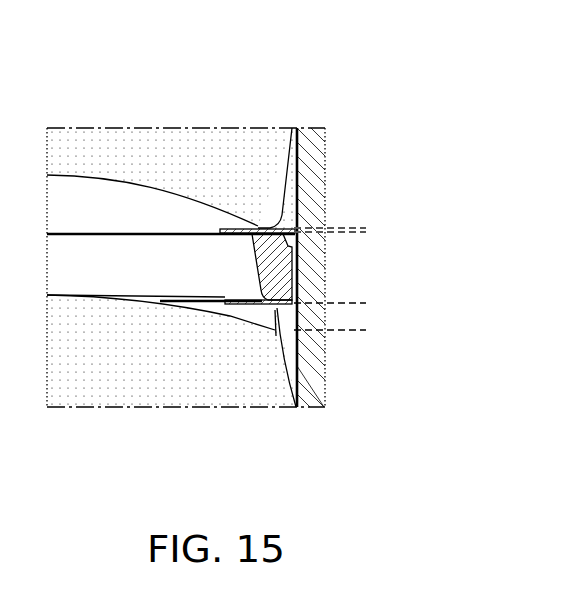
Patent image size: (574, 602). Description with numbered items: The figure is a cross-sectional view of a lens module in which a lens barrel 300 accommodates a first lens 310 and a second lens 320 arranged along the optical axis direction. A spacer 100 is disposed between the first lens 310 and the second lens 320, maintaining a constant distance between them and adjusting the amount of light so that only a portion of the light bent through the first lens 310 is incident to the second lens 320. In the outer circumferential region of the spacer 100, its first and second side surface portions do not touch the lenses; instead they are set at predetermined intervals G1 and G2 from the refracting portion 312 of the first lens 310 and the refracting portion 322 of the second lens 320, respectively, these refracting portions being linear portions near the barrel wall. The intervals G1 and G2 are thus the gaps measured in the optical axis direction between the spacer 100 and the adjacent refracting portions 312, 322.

The first lens 310 is at (198, 110).
The second lens 320 is at (198, 423).
The refracting portion of the first lens 312 is at (270, 148).
The refracting portion of the second lens 322 is at (272, 375).
The lens barrel 300 is at (315, 185).
The spacer 100 is at (268, 265).
The interval between first side surface portion and refracting portion of first lens G1 is at (358, 212).
The interval between second side surface portion and refracting portion of second le G2 is at (358, 285).